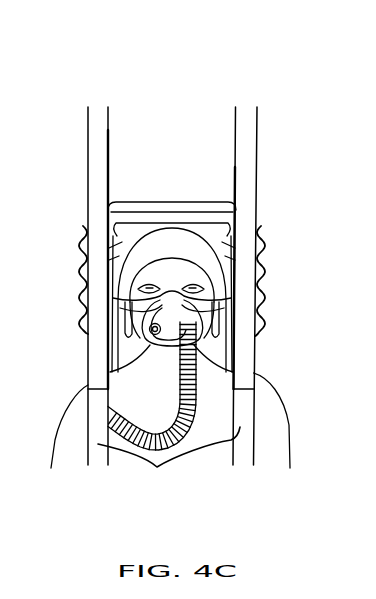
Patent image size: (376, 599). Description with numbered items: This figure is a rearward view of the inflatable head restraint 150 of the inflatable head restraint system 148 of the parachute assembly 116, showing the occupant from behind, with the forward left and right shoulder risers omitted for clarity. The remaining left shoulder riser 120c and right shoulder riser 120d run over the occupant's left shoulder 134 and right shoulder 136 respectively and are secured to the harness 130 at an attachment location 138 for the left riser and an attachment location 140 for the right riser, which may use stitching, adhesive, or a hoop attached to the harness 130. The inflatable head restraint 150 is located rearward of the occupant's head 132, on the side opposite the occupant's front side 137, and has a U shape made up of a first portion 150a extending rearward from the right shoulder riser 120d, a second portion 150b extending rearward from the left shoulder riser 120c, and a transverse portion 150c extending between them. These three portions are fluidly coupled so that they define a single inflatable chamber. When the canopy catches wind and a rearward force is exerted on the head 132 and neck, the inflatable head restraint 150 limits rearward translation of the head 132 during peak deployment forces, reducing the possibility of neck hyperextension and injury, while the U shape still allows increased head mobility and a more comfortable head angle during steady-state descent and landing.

The parachute assembly 116 is at (123, 84).
The inflatable head restraint system 148 is at (202, 143).
The inflatable head restraint 150 is at (149, 196).
The first portion 150a is at (83, 226).
The second portion 150b is at (265, 227).
The transverse portion 150c is at (200, 222).
The right shoulder riser 120d is at (88, 124).
The left shoulder riser 120c is at (250, 133).
The head 132 is at (159, 253).
The front side 137 is at (148, 414).
The right shoulder 136 is at (88, 390).
The left shoulder 134 is at (263, 396).
The attachment location 140 is at (88, 390).
The attachment location 138 is at (244, 391).
The harness 130 is at (157, 467).